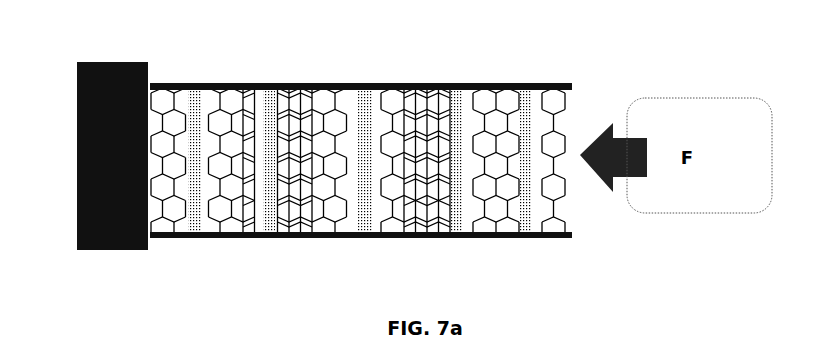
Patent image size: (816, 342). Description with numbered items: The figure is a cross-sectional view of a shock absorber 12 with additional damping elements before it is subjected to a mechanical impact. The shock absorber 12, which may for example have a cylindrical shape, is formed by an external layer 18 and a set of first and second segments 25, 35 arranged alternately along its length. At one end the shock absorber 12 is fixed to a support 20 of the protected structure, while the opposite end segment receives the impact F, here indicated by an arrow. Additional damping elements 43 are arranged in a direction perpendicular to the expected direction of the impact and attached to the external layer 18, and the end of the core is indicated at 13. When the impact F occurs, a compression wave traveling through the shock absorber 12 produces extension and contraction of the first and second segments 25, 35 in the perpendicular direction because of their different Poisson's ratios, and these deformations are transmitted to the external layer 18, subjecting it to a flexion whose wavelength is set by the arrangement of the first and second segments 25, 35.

The shock absorber 12 is at (385, 144).
The honeycomb core 13 is at (393, 156).
The external layer 18 is at (395, 83).
The support 20 is at (77, 158).
The first segments 25 is at (218, 217).
The second segments 35 is at (288, 215).
The reinforcing strips 43 is at (202, 83).